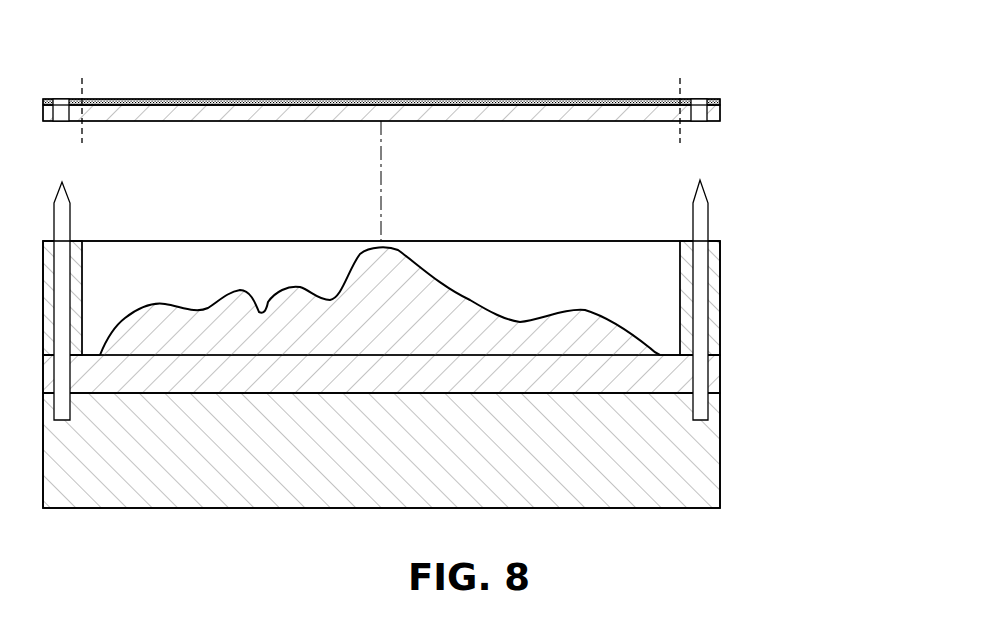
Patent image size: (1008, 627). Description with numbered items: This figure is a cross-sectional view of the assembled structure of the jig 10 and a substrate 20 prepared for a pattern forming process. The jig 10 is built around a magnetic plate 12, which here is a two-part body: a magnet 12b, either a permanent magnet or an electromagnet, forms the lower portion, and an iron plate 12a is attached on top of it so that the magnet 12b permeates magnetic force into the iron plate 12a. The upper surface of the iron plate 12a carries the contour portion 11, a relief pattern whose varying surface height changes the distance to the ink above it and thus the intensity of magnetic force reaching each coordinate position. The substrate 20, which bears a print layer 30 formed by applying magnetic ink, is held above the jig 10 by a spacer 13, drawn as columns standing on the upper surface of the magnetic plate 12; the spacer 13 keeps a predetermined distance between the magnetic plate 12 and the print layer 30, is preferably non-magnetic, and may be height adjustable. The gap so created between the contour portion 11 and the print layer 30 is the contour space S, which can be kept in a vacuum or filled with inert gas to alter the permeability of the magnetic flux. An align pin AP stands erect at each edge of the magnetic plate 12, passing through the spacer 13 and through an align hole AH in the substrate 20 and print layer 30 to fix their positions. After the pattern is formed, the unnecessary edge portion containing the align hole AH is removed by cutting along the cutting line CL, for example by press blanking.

The jig 10 is at (462, 335).
The contour portion 11 is at (425, 268).
The magnetic plate 12 is at (460, 431).
The iron plate 12a is at (718, 375).
The magnet 12b is at (718, 420).
The spacer 13 is at (718, 293).
The substrate 20 is at (572, 116).
The print layer 30 is at (503, 99).
The align hole AH is at (700, 103).
The align pin AP is at (704, 213).
The cutting line CL is at (678, 90).
The contour space S is at (524, 265).